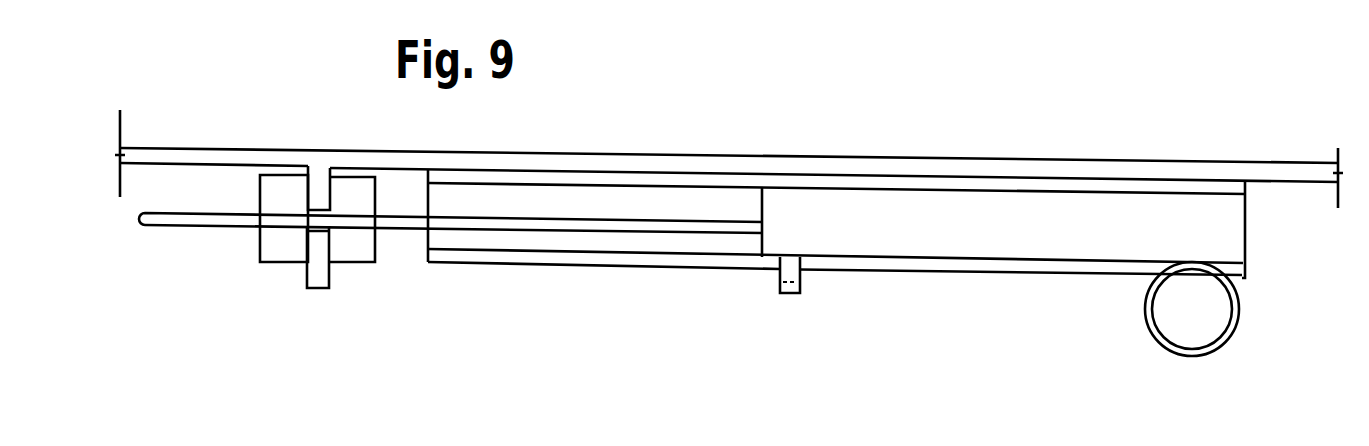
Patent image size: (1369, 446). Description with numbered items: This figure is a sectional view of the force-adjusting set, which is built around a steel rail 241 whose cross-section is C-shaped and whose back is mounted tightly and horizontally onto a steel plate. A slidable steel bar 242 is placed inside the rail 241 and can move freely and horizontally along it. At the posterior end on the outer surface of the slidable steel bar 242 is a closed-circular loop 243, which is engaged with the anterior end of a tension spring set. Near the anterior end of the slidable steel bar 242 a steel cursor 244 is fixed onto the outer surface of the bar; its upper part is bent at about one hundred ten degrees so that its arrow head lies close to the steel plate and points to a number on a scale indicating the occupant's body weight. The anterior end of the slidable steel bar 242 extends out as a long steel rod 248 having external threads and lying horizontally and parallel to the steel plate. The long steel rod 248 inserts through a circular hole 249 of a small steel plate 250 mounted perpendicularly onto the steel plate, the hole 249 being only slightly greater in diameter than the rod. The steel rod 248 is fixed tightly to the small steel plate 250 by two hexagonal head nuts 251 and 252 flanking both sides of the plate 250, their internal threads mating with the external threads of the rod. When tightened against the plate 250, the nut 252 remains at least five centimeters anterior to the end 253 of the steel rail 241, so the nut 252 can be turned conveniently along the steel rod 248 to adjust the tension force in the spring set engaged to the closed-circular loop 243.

The steel rail 241 is at (545, 265).
The slidable steel bar 242 is at (850, 220).
The closed-circular loop 243 is at (1141, 313).
The cursor 244 is at (773, 280).
The long steel rod 248 is at (200, 224).
The circular hole 249 is at (307, 233).
The small steel plate 250 is at (322, 290).
The hexagonal head nut 251 is at (292, 265).
The hexagonal head nut 252 is at (360, 267).
The end of the steel rail 253 is at (427, 249).